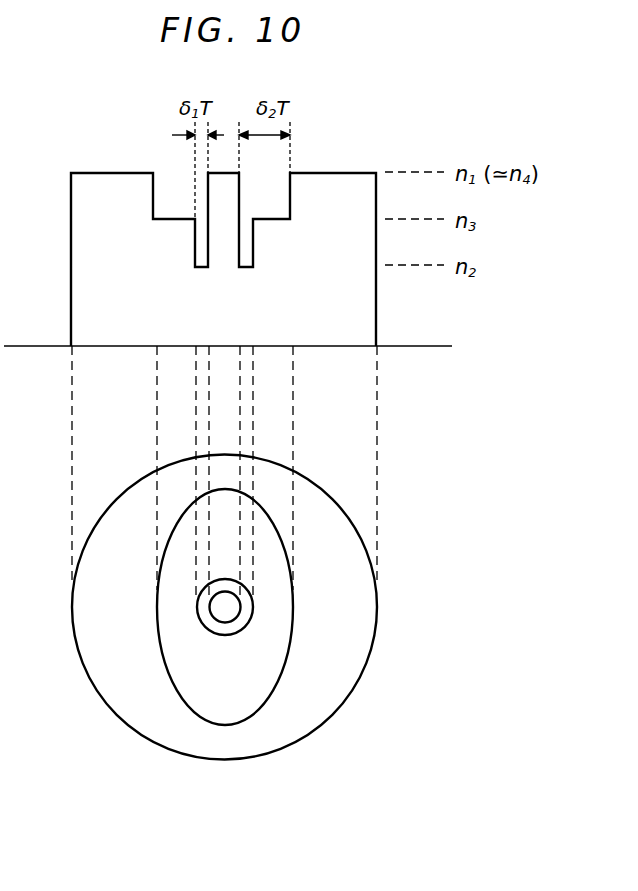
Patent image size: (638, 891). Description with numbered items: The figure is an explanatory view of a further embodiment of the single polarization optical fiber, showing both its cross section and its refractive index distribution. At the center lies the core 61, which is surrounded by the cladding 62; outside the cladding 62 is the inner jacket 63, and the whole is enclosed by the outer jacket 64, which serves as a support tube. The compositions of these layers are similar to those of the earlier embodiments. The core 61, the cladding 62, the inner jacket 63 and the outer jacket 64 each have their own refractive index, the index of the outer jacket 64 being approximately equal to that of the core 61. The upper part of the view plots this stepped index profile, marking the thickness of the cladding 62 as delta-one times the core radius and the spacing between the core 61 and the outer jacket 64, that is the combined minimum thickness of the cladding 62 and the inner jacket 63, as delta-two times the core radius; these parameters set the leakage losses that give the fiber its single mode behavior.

The core 61 is at (237, 610).
The cladding 62 is at (243, 628).
The inner jacket 63 is at (193, 675).
The outer jacket 64 is at (105, 672).